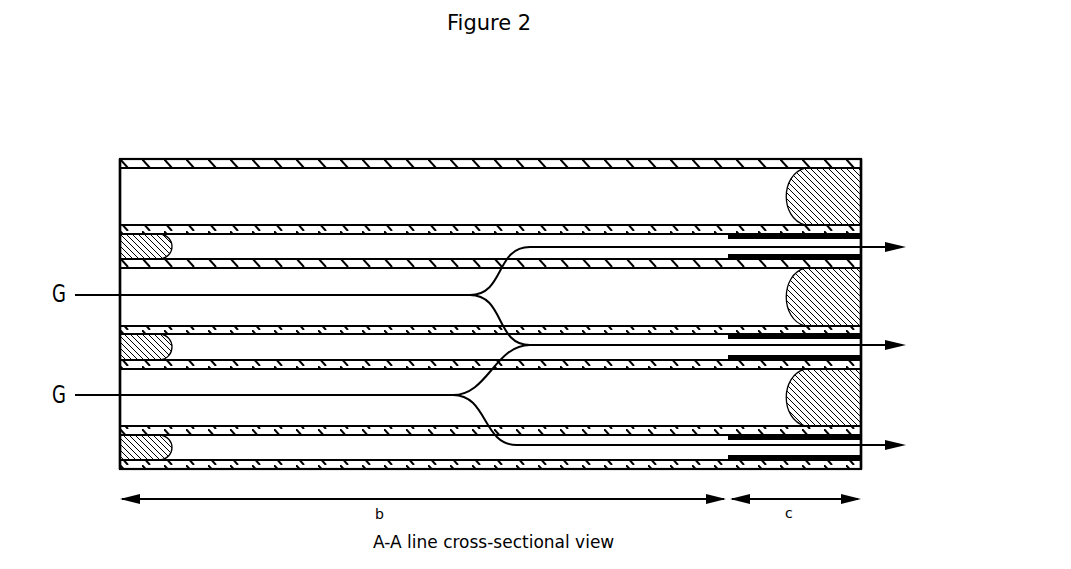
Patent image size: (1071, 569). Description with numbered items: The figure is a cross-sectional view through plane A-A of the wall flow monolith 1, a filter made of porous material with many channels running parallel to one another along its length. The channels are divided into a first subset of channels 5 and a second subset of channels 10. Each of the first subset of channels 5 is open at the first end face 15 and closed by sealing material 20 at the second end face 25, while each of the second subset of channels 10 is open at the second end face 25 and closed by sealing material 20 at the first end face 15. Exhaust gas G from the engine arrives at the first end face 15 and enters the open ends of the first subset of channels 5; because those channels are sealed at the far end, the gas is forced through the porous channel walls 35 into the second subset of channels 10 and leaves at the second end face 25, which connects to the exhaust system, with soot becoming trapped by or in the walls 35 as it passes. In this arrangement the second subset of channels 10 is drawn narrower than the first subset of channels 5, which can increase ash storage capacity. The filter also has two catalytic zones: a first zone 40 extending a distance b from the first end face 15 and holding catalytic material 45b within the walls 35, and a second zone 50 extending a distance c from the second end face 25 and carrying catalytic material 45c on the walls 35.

The wall flow monolith 1 is at (358, 128).
The first subset of channels 5 is at (142, 190).
The second subset of channels 10 is at (861, 256).
The first end face 15 is at (95, 155).
The sealing material 20 is at (143, 245).
The second end face 25 is at (892, 158).
The channel wall 35 is at (795, 160).
The first zone 40 is at (423, 492).
The catalytic material 45b is at (600, 160).
The catalytic material 45c is at (861, 437).
The second zone 50 is at (795, 490).